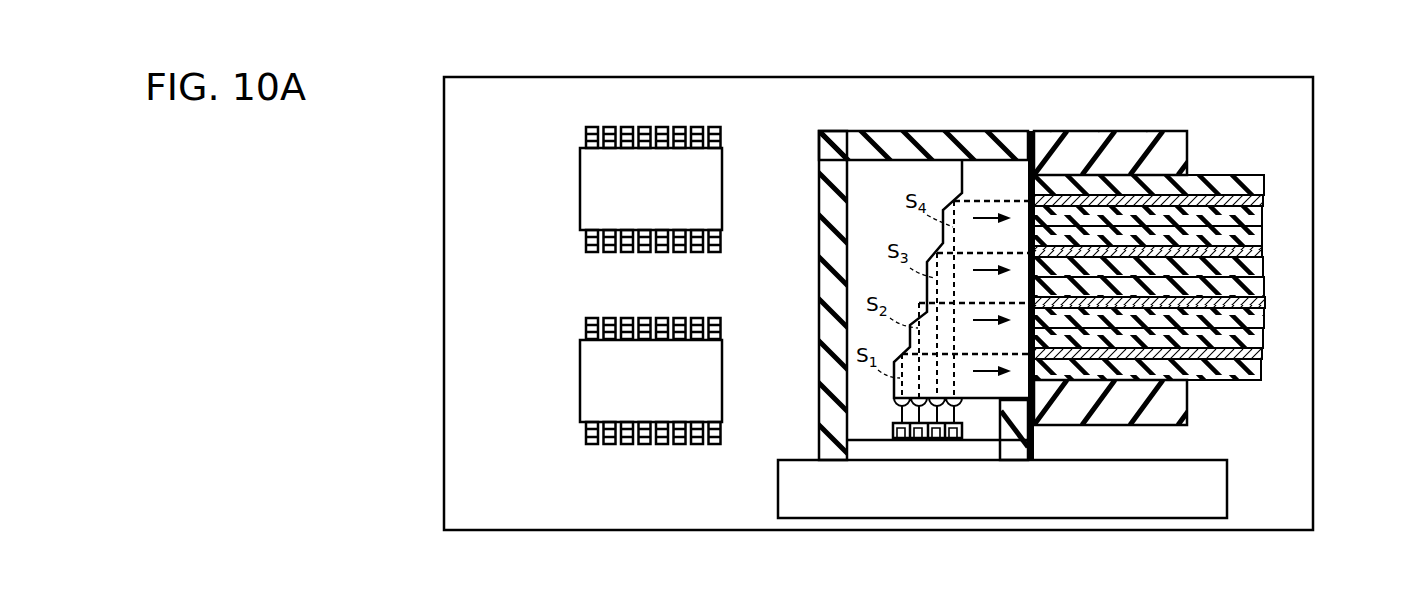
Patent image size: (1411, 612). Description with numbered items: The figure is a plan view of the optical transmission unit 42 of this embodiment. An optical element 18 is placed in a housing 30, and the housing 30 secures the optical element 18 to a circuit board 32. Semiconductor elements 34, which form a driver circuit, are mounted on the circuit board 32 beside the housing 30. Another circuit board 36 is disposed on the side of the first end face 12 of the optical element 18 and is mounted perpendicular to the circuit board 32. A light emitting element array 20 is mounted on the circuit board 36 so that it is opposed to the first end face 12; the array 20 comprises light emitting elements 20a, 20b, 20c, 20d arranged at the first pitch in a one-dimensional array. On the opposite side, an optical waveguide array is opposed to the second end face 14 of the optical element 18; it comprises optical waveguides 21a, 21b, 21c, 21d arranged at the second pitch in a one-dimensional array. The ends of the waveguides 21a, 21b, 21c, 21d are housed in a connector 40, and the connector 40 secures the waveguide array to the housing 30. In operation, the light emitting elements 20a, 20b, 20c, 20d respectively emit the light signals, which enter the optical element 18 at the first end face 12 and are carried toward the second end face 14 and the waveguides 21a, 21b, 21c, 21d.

The optical transmission unit 42 is at (782, 58).
The semiconductor element 34 is at (620, 165).
The circuit board 36 is at (1200, 505).
The optical element 18 is at (892, 180).
The housing 30 is at (996, 133).
The first end face 12 is at (983, 400).
The second end face 14 is at (1032, 163).
The connector 40 is at (1110, 148).
The circuit board 32 is at (1194, 92).
The optical waveguide 21a is at (1262, 350).
The optical waveguide 21b is at (1265, 298).
The optical waveguide 21c is at (1263, 248).
The optical waveguide 21d is at (1263, 198).
The light emitting element array 20 is at (882, 430).
The light emitting element 20a is at (900, 438).
The light emitting element 20b is at (918, 438).
The light emitting element 20c is at (936, 438).
The light emitting element 20d is at (955, 438).